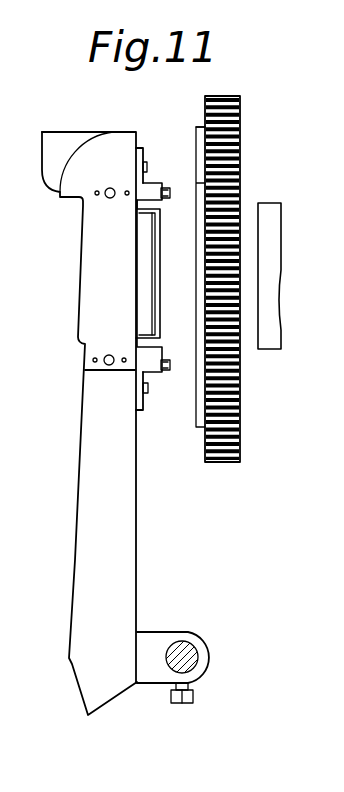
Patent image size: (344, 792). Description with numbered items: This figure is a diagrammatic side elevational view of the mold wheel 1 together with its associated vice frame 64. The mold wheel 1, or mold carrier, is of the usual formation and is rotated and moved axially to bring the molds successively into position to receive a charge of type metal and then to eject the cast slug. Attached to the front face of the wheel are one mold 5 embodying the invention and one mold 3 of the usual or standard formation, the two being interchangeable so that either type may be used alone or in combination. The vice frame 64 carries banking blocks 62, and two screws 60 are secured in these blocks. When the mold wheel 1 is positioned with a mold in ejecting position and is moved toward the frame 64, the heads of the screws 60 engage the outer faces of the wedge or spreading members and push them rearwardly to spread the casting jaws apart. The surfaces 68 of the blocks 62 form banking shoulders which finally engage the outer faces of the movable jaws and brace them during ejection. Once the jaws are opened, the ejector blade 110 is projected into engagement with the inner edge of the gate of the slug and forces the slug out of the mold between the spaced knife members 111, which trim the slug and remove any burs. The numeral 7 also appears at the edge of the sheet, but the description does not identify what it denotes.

The mold wheel 1 is at (239, 138).
The mold of standard formation 3 is at (198, 286).
The mold 5 is at (200, 128).
The unspecified part 7 is at (339, 614).
The screws 60 is at (167, 197).
The banking blocks 62 is at (142, 178).
The vice frame 64 is at (77, 280).
The banking shoulder surfaces 68 is at (161, 186).
The ejector blade 110 is at (272, 287).
The knife members 111 is at (147, 263).